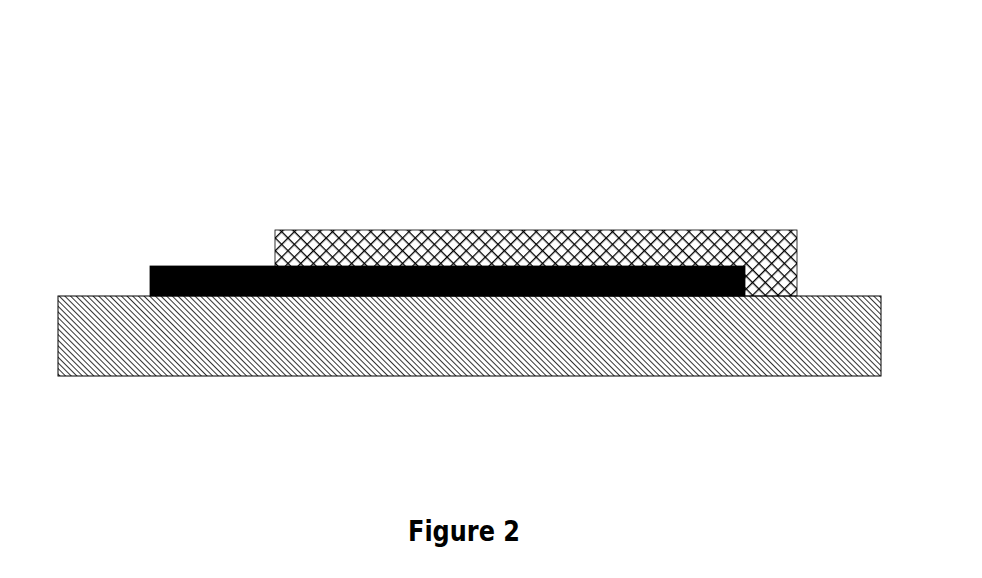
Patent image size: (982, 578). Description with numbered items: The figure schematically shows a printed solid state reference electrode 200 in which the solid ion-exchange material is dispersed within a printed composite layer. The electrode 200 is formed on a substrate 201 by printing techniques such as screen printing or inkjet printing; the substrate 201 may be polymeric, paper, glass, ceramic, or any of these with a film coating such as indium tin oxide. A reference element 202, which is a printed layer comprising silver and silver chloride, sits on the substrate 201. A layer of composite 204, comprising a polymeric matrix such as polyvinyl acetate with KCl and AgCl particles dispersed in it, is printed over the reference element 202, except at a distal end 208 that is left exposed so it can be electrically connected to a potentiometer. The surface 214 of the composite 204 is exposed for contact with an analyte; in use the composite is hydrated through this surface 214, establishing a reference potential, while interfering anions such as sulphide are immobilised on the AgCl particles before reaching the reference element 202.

The electrode 200 is at (284, 100).
The substrate 201 is at (152, 340).
The reference element 202 is at (243, 278).
The composite 204 is at (433, 237).
The distal end 208 is at (170, 256).
The surface 214 is at (550, 223).